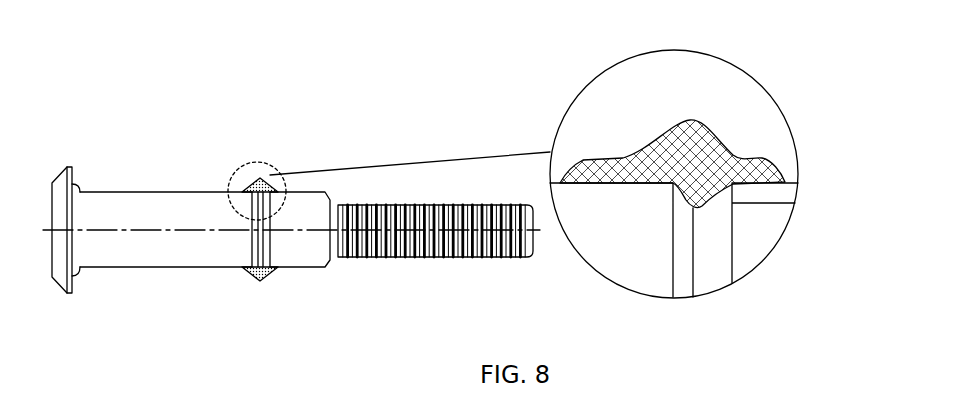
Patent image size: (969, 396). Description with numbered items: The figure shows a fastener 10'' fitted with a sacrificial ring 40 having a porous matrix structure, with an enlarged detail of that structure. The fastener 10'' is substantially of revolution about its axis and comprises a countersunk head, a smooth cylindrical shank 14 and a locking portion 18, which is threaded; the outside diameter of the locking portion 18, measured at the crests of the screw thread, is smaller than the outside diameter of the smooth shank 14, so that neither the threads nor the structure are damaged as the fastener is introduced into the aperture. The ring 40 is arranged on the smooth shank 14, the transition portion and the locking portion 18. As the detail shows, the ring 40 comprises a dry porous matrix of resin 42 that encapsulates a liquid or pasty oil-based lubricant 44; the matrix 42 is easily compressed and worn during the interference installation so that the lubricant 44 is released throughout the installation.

The fastener 10'' is at (291, 191).
The smooth cylindrical shank 14 is at (135, 267).
The locking portion 18 is at (297, 268).
The ring 40 is at (240, 171).
The dry porous matrix of resin 42 is at (720, 163).
The lubricant 44 is at (695, 140).